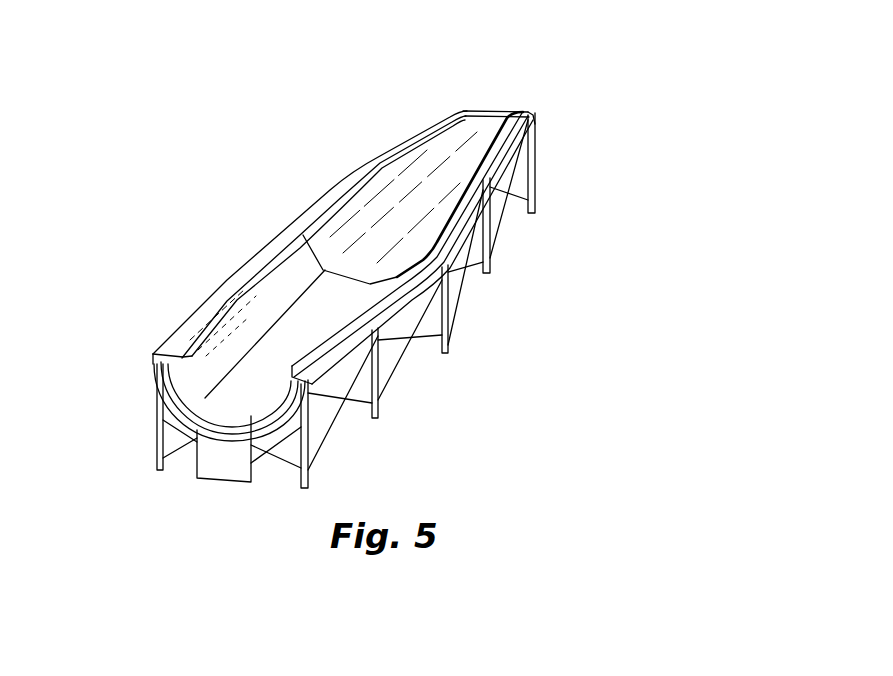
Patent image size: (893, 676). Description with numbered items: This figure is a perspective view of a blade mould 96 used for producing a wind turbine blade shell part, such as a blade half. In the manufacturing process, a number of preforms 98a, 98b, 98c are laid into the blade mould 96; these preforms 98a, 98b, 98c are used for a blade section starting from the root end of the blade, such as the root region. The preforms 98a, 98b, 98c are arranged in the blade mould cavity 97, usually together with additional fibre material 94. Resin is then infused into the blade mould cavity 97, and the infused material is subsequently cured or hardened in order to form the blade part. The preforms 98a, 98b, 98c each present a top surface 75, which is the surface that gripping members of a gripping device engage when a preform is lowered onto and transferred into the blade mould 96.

The top surface 75 is at (302, 355).
The additional fibre material 94 is at (470, 112).
The blade mould 96 is at (222, 269).
The blade mould cavity 97 is at (333, 210).
The preform 98a is at (197, 380).
The preform 98b is at (222, 408).
The preform 98c is at (262, 413).